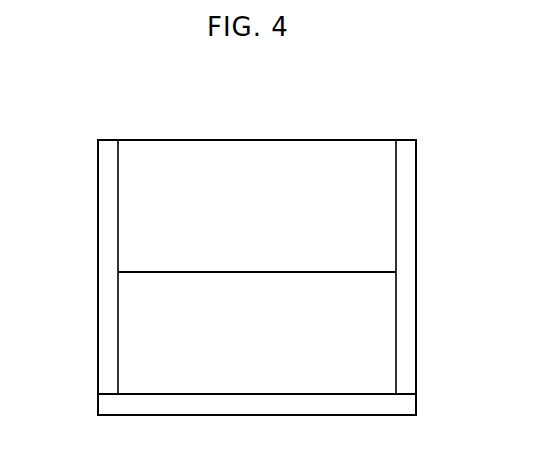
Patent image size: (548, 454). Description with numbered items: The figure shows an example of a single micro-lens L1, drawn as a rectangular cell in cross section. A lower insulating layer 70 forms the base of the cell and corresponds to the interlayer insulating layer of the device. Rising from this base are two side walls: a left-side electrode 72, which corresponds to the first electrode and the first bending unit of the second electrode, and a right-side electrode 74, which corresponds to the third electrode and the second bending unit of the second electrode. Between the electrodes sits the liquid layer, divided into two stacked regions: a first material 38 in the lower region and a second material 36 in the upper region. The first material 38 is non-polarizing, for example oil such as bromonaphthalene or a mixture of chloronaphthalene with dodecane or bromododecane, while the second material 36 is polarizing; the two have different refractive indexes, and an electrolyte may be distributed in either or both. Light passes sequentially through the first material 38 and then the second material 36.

The micro-lens L1 is at (84, 134).
The left-side electrode 72 is at (104, 213).
The right-side electrode 74 is at (412, 246).
The lower insulating layer 70 is at (102, 403).
The second material 36 is at (382, 184).
The first material 38 is at (382, 355).